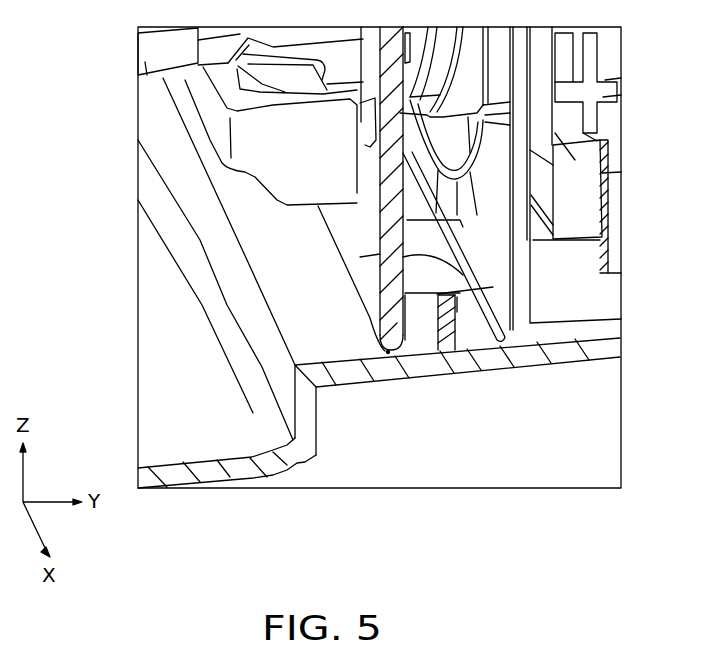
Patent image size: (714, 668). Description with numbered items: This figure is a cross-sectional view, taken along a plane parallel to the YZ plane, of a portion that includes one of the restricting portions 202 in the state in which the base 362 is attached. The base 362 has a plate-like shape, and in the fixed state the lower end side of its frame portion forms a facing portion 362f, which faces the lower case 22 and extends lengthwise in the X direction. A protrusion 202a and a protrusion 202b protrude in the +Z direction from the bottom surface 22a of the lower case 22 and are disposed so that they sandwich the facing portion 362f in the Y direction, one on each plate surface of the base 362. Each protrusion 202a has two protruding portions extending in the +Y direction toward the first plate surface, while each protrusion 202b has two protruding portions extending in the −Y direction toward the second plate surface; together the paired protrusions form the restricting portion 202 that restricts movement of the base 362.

The lower case 22 is at (183, 478).
The bottom surface 22a is at (295, 308).
The restricting portion 202 is at (296, 366).
The protrusion 202b is at (358, 337).
The protrusion 202a is at (423, 330).
The base 362 is at (500, 340).
The facing portion 362f is at (388, 356).